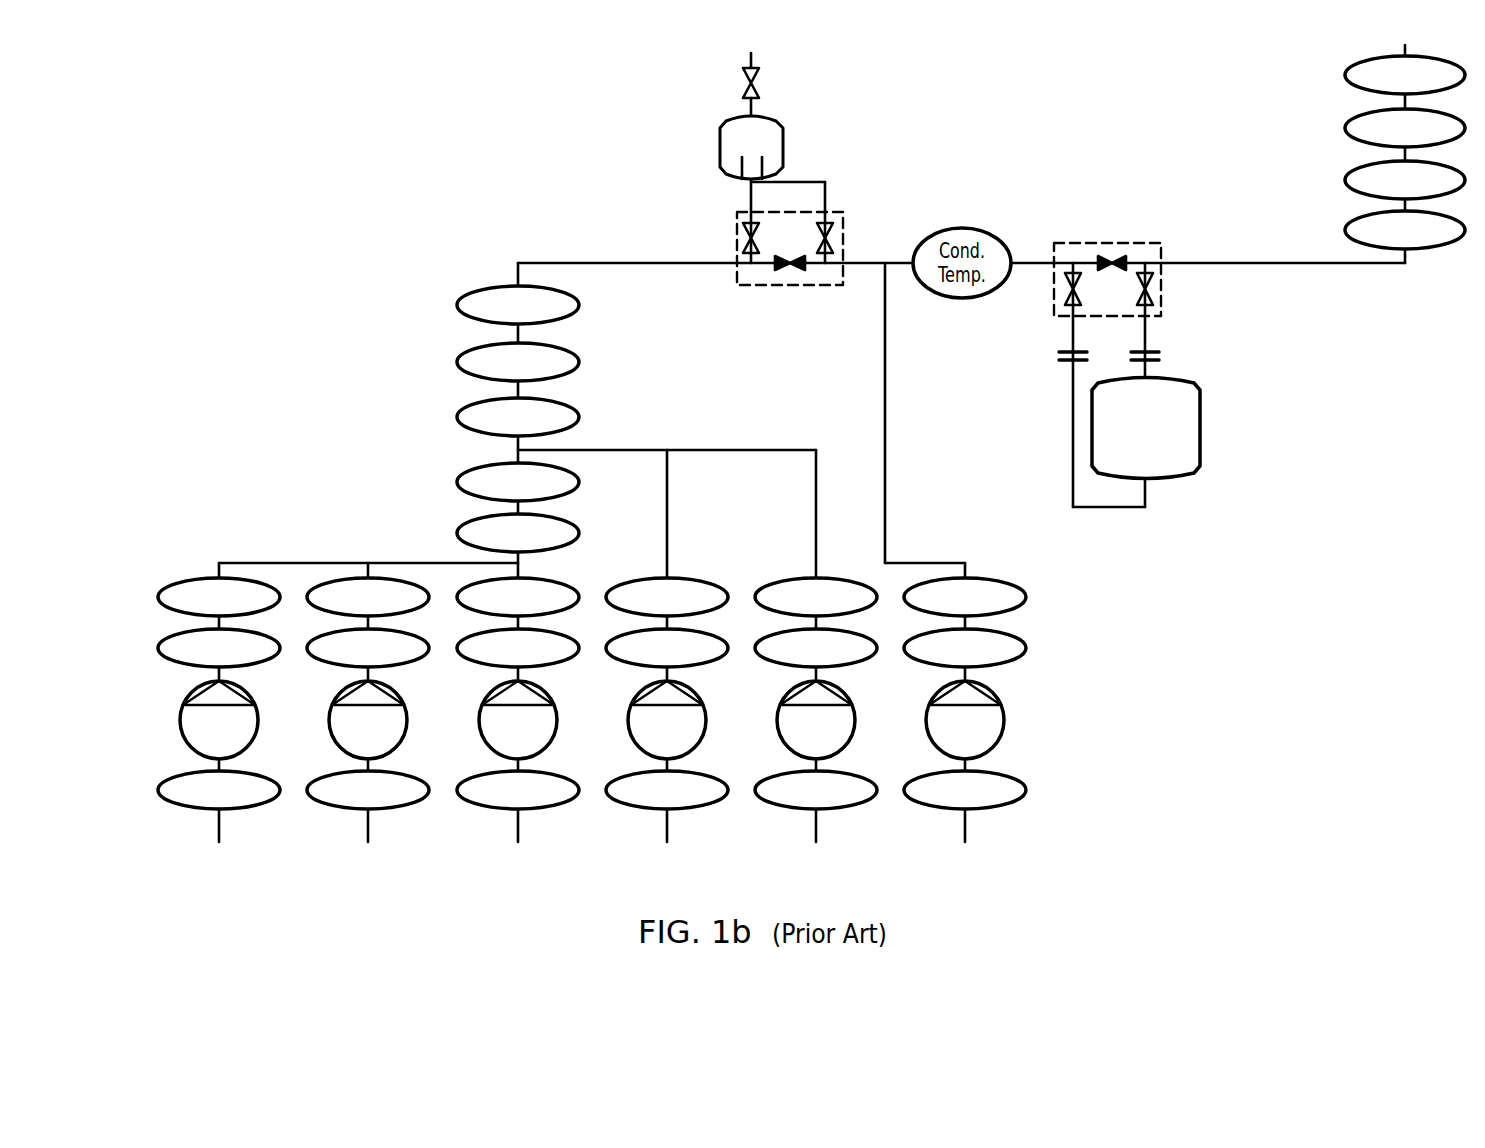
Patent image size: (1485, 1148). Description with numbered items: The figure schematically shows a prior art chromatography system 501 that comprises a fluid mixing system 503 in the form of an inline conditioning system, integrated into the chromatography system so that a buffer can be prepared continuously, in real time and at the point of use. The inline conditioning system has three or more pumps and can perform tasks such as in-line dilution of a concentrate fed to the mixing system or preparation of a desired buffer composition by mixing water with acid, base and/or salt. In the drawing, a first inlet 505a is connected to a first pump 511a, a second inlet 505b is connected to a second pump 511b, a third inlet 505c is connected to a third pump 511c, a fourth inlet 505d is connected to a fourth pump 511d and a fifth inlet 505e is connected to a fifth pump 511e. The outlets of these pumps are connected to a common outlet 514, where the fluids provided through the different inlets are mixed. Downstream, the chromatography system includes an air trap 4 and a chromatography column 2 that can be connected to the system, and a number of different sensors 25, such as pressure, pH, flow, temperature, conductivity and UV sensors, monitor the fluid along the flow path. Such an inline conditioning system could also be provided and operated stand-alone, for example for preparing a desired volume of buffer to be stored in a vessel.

The chromatography system 501 is at (1125, 301).
The fluid mixing system 503 is at (564, 532).
The sensors 25 is at (1348, 82).
The common outlet 514 is at (515, 443).
The first pump 511a is at (191, 693).
The second pump 511b is at (340, 693).
The third pump 511c is at (490, 693).
The fourth pump 511d is at (639, 693).
The fifth pump 511e is at (788, 693).
The first inlet 505a is at (205, 825).
The second inlet 505b is at (354, 825).
The third inlet 505c is at (504, 825).
The fourth inlet 505d is at (653, 825).
The fifth inlet 505e is at (802, 825).
The air trap 4 is at (743, 151).
The chromatography column 2 is at (1137, 442).